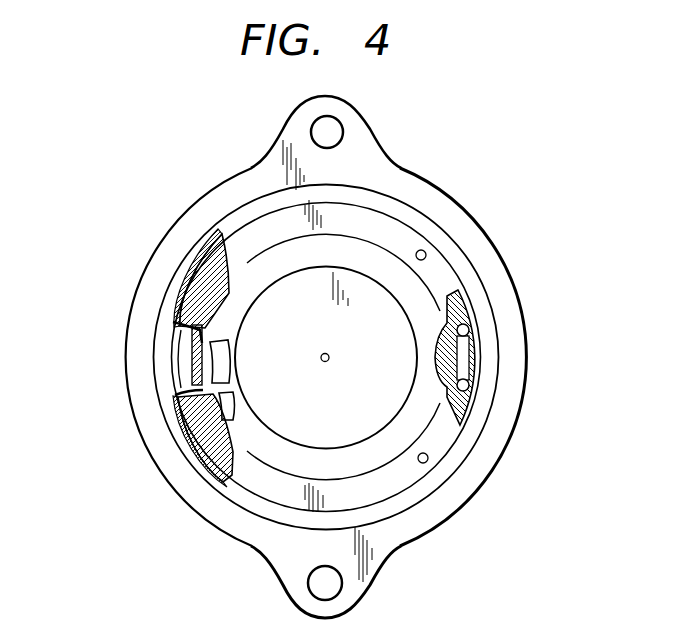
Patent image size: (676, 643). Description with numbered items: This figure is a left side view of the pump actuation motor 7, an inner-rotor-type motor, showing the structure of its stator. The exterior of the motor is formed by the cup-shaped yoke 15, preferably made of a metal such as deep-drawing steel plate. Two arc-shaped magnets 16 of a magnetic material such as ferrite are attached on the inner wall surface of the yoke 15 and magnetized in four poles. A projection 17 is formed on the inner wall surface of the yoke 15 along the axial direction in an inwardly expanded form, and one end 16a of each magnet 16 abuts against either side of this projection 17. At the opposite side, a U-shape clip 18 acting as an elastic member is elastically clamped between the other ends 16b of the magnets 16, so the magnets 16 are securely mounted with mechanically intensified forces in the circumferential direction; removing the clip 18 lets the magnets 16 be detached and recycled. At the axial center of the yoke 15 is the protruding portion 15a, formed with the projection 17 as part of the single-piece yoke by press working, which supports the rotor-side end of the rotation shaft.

The pump actuation motor 7 is at (474, 185).
The yoke 15 is at (268, 492).
The protruding portion 15a is at (328, 362).
The arc-shaped magnets 16 is at (193, 280).
The one end of magnet 16a is at (193, 342).
The other ends of magnets 16b is at (475, 340).
The projection 17 is at (193, 358).
The U-shape clip 18 is at (478, 385).